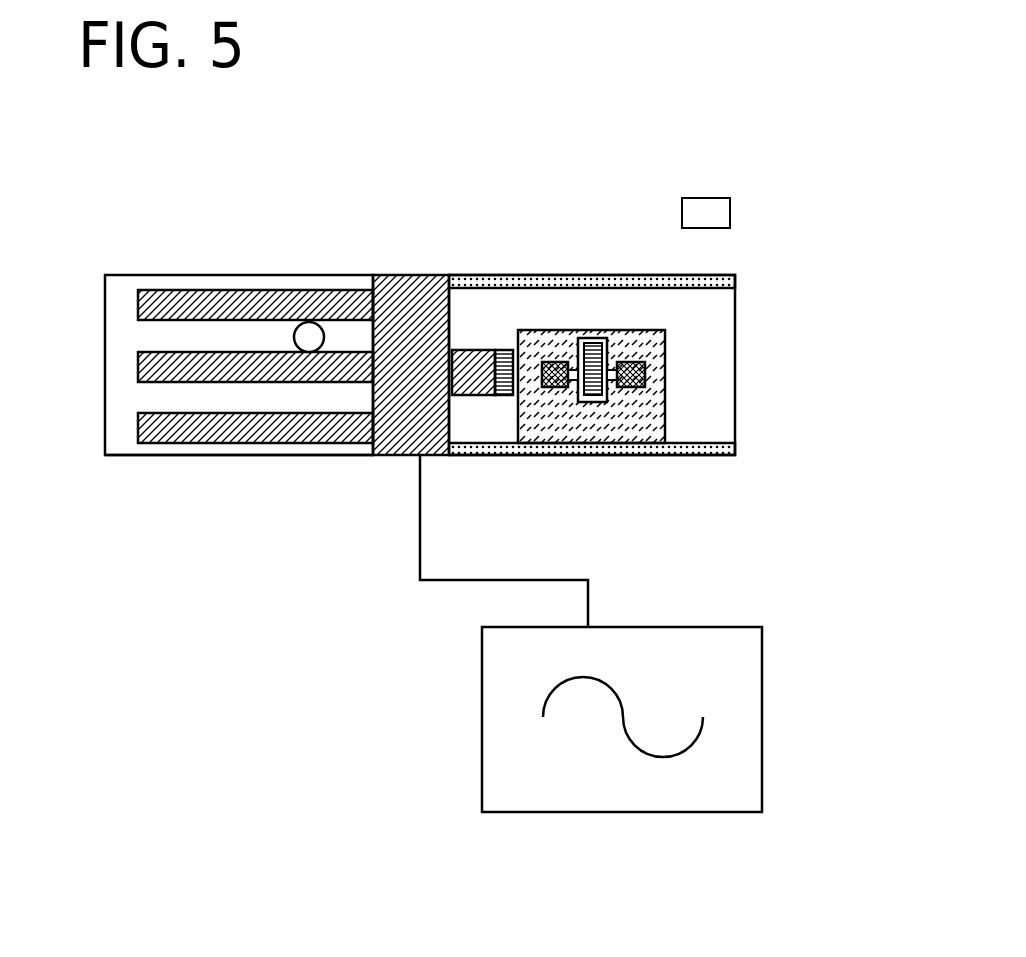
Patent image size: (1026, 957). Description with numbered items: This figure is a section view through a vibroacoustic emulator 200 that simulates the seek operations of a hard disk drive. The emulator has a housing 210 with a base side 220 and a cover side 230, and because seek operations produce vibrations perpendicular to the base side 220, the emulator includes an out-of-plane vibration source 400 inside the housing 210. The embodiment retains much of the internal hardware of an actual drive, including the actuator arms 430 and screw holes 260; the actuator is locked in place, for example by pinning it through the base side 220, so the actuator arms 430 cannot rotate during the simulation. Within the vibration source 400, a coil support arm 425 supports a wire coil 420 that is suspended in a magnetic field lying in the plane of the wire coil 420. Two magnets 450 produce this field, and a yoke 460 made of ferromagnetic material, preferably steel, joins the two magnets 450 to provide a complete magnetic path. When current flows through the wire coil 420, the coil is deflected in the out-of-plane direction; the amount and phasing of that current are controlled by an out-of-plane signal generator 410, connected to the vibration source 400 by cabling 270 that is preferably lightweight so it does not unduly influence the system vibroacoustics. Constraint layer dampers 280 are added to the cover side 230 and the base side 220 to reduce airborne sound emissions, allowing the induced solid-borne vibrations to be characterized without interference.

The vibroacoustic emulator 200 is at (678, 175).
The housing 210 is at (107, 277).
The base side 220 is at (213, 459).
The cover side 230 is at (368, 273).
The screw holes 260 is at (295, 322).
The wire 270 is at (442, 582).
The constraint layer dampers 280 is at (723, 273).
The out-of-plane vibration source 400 is at (471, 273).
The out-of-plane signal generator 410 is at (482, 725).
The wire coil 420 is at (578, 338).
The coil support arm 425 is at (482, 350).
The actuator arms 430 is at (198, 443).
The magnets 450 is at (550, 388).
The yoke 460 is at (610, 443).